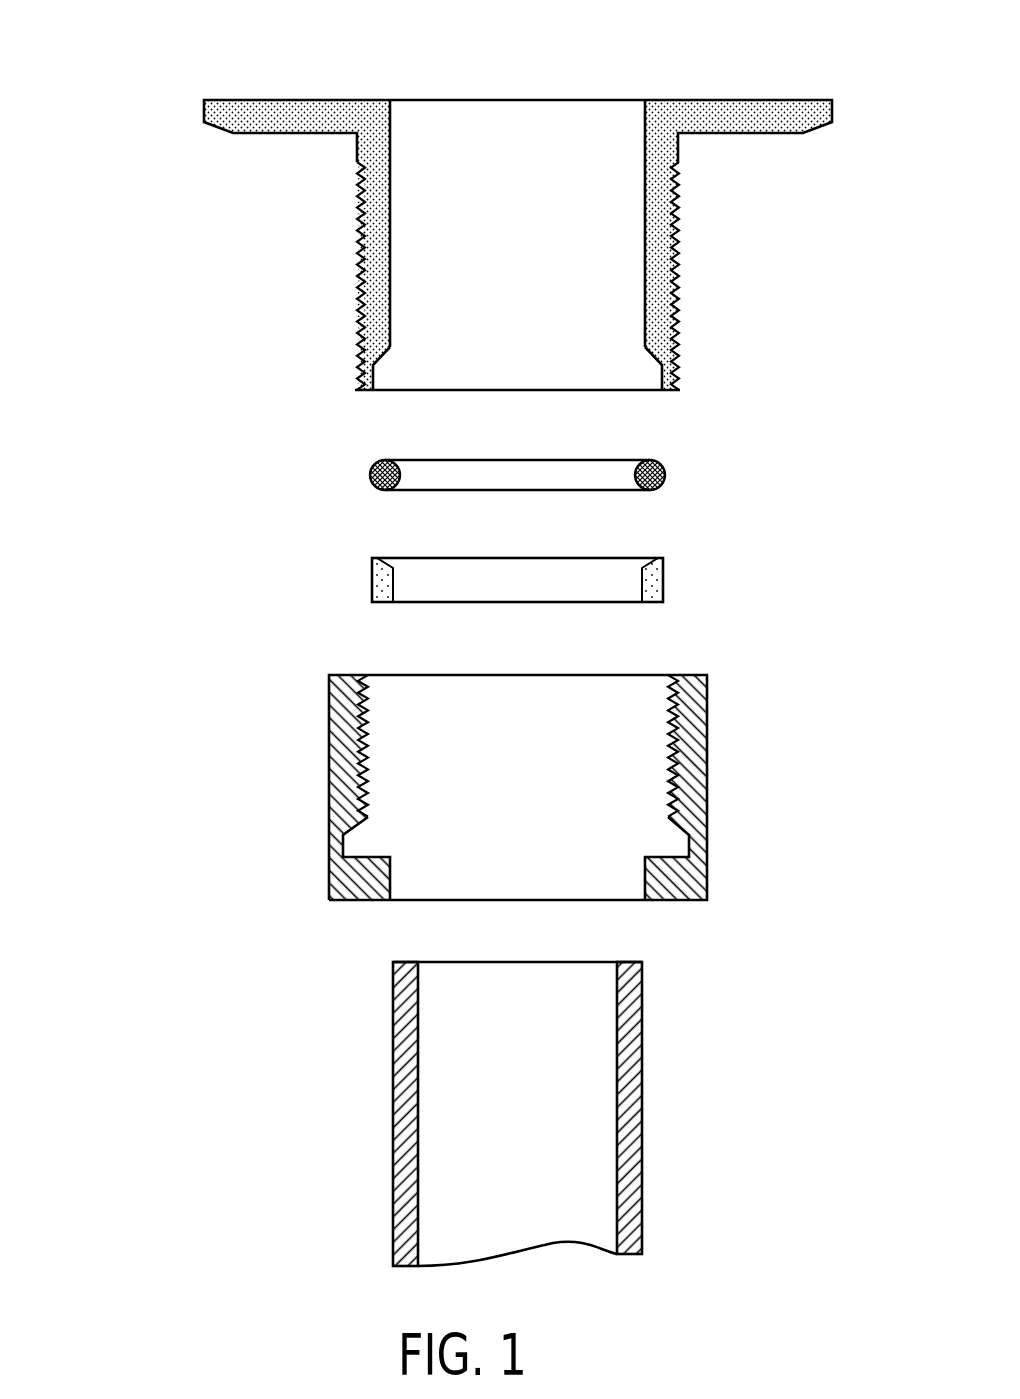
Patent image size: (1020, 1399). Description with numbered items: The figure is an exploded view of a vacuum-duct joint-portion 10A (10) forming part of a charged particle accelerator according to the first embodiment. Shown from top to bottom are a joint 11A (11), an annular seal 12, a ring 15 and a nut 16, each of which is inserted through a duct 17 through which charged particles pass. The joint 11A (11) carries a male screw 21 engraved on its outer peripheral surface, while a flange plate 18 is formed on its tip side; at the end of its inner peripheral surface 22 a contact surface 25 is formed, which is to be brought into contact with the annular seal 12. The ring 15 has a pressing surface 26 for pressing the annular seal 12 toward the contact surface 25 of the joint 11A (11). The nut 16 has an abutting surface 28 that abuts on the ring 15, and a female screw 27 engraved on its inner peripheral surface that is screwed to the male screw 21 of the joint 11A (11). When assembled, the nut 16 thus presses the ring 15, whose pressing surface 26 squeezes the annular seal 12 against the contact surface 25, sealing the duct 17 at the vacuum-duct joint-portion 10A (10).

The vacuum-duct joint-portion 10A is at (110, 76).
The vacuum-duct joint-portion 10 is at (447, 683).
The joint 11A is at (147, 408).
The joint 11 is at (494, 259).
The annular seal 12 is at (371, 475).
The ring 15 is at (371, 583).
The nut 16 is at (147, 755).
The duct 17 is at (393, 1116).
The flange plate 18 is at (305, 135).
The male screw 21 is at (357, 237).
The inner peripheral surface 22 is at (355, 337).
The contact surface 25 is at (380, 386).
The pressing surface 26 is at (388, 563).
The female screw 27 is at (340, 737).
The abutting surface 28 is at (372, 856).